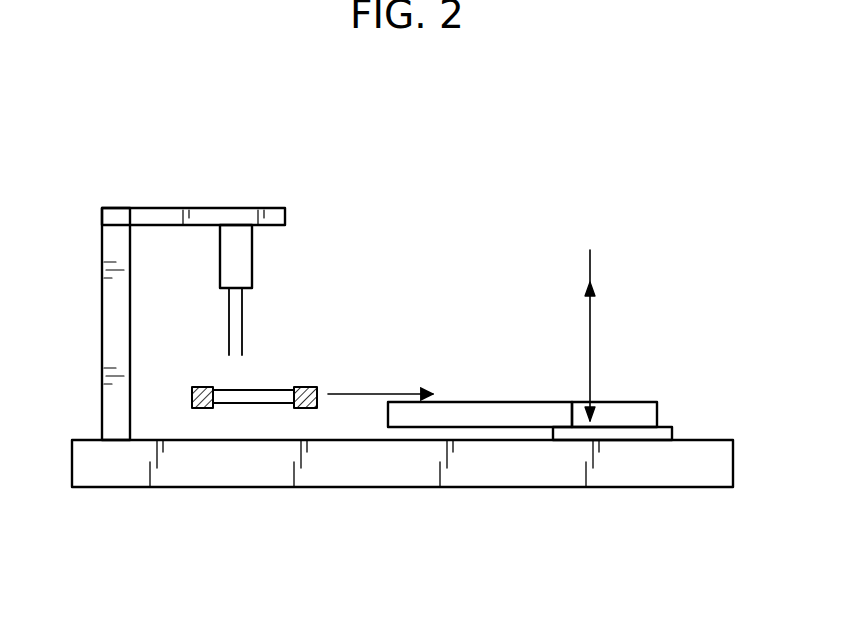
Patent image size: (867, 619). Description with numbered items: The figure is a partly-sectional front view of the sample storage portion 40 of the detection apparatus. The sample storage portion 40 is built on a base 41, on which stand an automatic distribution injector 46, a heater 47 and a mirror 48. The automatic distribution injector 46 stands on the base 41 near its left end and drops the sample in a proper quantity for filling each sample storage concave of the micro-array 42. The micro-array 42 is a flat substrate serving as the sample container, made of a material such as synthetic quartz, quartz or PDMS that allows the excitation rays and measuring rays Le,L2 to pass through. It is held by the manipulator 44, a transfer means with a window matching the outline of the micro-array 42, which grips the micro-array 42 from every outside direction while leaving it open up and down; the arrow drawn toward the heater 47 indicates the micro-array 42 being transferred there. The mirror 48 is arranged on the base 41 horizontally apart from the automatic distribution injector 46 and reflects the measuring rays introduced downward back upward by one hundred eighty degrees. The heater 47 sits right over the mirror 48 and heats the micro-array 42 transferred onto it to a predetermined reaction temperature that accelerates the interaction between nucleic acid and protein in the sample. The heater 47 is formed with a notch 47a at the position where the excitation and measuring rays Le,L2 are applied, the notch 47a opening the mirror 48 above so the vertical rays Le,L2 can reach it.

The sample storage portion 40 is at (414, 196).
The base 41 is at (465, 475).
The micro-array 42 is at (262, 387).
The manipulator 44 is at (305, 387).
The automatic distribution injector 46 is at (262, 265).
The heater 47 is at (503, 402).
The notch 47a is at (622, 410).
The mirror 48 is at (673, 432).
The excitation rays and measuring rays Le,L2 is at (591, 313).